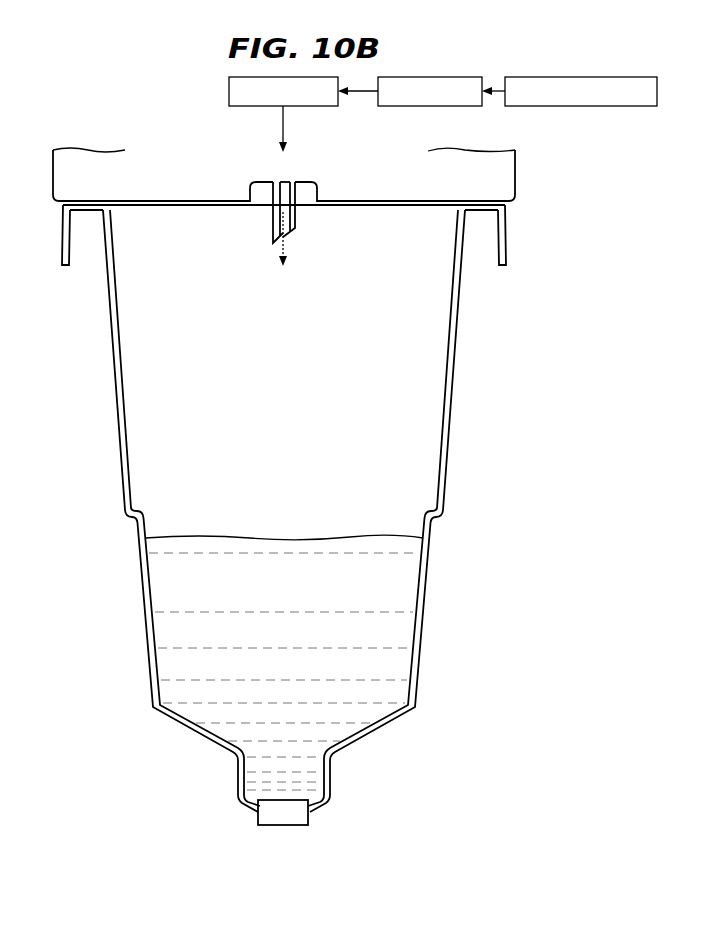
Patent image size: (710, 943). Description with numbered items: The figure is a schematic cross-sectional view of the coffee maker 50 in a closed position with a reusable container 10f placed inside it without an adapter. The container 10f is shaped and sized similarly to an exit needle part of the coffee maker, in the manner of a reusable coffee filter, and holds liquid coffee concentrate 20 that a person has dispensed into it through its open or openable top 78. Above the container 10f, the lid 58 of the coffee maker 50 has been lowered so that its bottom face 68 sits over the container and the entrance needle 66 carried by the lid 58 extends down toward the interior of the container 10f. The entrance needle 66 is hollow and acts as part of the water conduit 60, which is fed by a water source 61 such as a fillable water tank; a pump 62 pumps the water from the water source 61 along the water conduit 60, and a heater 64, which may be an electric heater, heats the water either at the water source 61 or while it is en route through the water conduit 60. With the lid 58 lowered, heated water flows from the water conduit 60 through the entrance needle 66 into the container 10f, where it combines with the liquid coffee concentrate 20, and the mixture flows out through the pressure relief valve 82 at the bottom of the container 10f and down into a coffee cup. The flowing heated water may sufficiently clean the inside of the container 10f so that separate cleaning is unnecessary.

The container 10f is at (106, 353).
The liquid coffee concentrate 20 is at (203, 545).
The coffee maker 50 is at (538, 160).
The lid 58 is at (90, 157).
The water conduit 60 is at (283, 181).
The water source 61 is at (582, 77).
The pump 62 is at (428, 77).
The heater 64 is at (229, 91).
The entrance needle 66 is at (270, 234).
The bottom face 68 is at (508, 208).
The top 78 is at (362, 212).
The pressure relief valve 82 is at (312, 822).